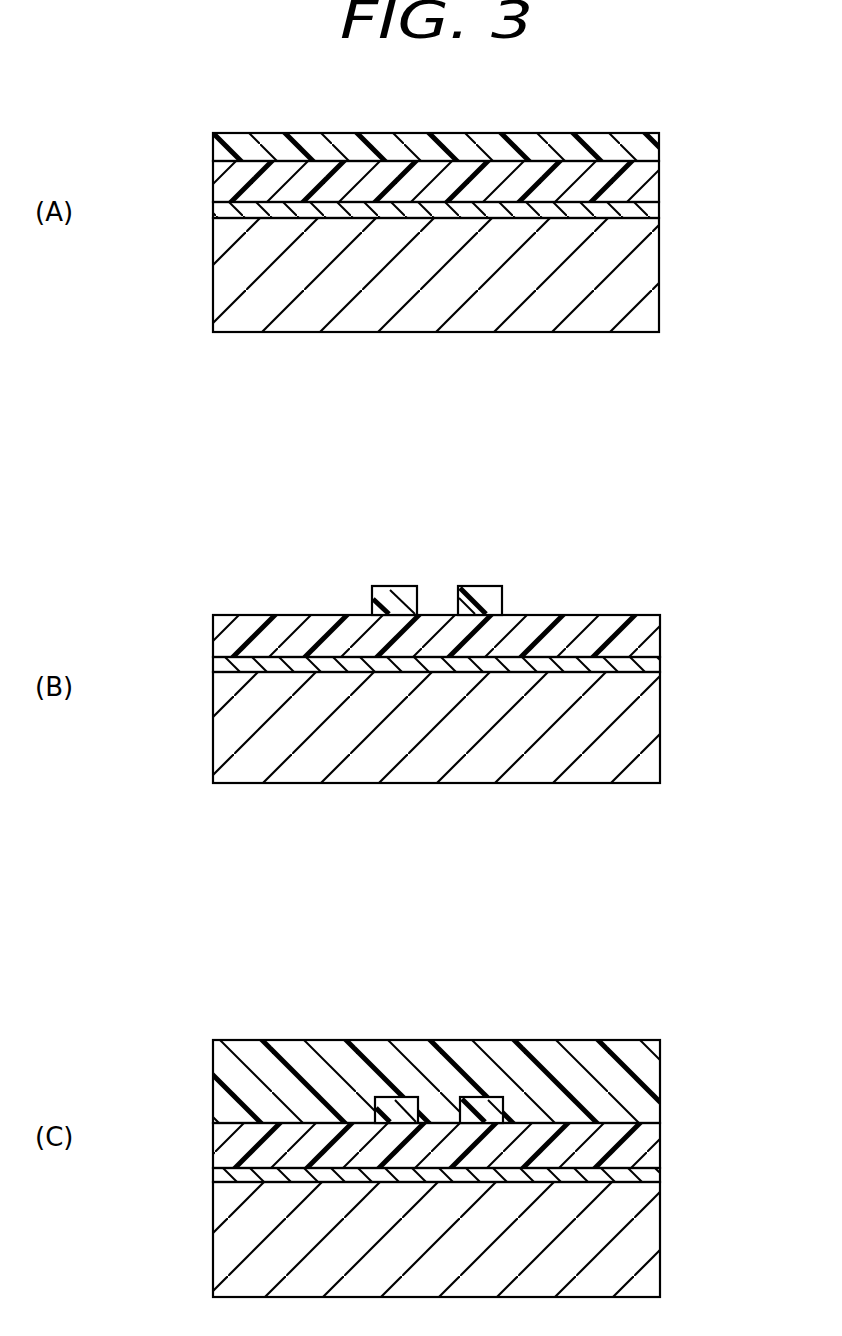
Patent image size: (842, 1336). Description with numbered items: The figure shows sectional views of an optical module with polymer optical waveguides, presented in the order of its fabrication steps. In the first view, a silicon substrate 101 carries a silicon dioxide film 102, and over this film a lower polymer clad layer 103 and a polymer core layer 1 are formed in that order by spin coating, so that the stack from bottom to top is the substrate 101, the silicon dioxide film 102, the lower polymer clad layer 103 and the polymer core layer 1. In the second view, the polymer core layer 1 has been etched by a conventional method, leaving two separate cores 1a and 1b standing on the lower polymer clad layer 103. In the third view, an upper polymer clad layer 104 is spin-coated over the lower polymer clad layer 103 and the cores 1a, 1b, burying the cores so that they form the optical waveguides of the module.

The polymer core layer 1 is at (660, 143).
The core 1a is at (392, 590).
The core 1b is at (478, 590).
The silicon substrate 101 is at (660, 271).
The silicon dioxide film 102 is at (212, 209).
The lower polymer clad layer 103 is at (660, 181).
The upper polymer clad layer 104 is at (660, 1063).